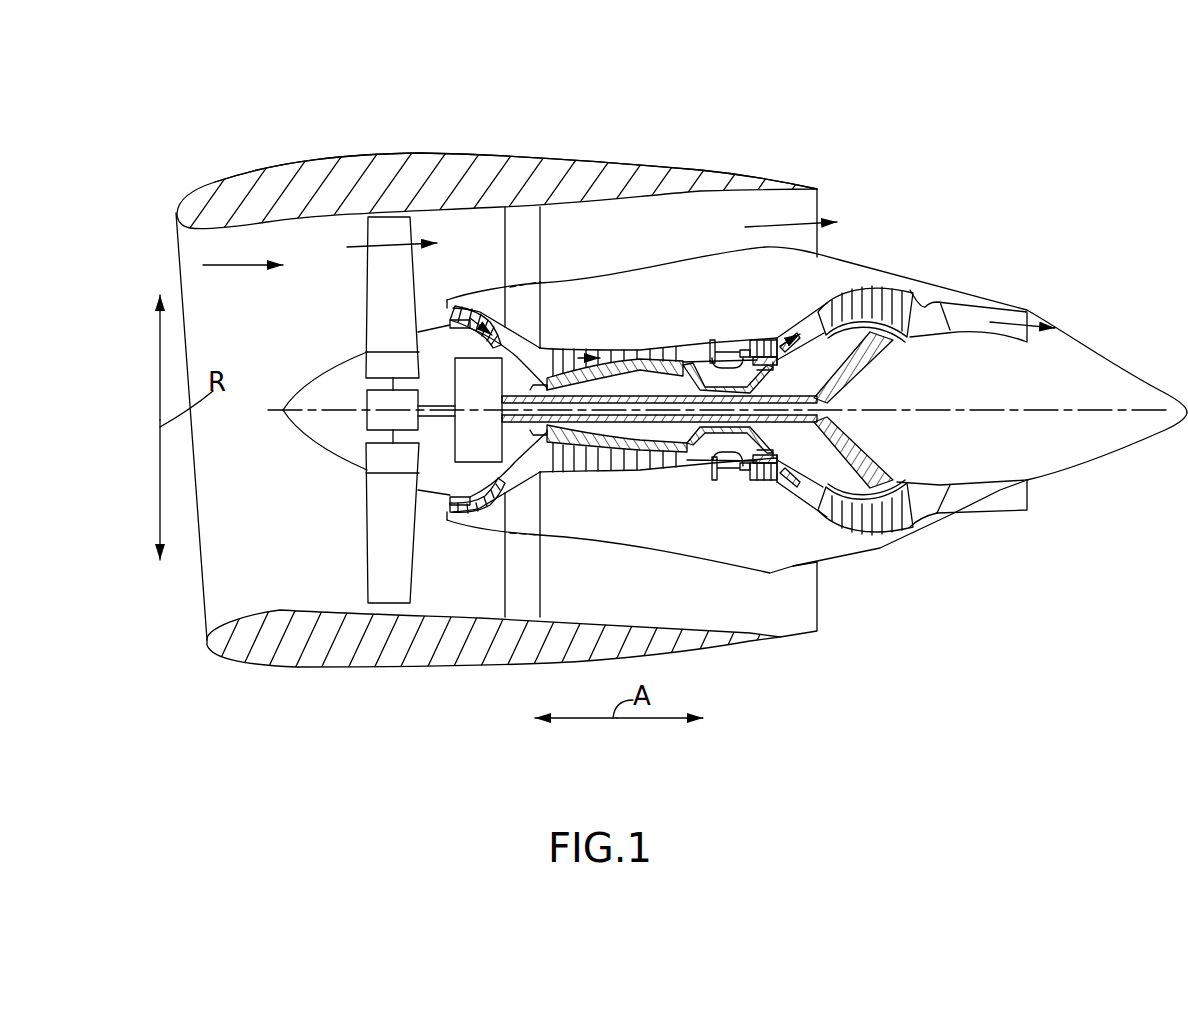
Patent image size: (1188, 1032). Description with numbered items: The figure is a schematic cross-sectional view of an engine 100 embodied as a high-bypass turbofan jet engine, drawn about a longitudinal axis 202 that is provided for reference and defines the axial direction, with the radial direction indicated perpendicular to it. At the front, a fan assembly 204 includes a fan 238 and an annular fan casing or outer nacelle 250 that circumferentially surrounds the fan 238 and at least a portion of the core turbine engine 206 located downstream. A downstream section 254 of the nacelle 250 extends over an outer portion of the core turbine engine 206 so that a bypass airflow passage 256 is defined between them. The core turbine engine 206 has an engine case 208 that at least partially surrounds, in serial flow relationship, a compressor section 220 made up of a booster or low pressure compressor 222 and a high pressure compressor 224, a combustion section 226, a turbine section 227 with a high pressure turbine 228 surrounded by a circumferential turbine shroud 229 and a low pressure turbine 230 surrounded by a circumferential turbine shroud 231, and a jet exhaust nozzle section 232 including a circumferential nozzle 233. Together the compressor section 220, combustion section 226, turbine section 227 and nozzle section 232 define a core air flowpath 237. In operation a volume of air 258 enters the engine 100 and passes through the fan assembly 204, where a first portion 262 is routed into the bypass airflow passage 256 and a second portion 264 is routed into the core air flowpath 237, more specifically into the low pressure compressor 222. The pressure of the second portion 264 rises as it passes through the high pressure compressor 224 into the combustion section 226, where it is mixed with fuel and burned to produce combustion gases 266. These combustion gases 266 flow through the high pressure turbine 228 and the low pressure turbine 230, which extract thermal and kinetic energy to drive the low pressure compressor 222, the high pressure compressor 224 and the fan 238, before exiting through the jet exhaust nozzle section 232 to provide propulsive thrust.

The engine 100 is at (1013, 192).
The longitudinal axis 202 is at (977, 410).
The fan assembly 204 is at (272, 238).
The core turbine engine 206 is at (632, 308).
The engine case 208 is at (727, 573).
The compressor section 220 is at (550, 325).
The low pressure (LP) compressor 222 is at (502, 483).
The high pressure (HP) compressor 224 is at (585, 475).
The combustion section 226 is at (729, 478).
The turbine section 227 is at (788, 567).
The high pressure (HP) turbine 228 is at (783, 472).
The circumferential turbine shroud 229 is at (777, 343).
The low pressure (LP) turbine 230 is at (908, 537).
The circumferential turbine shroud 231 is at (873, 533).
The jet exhaust nozzle section 232 is at (957, 511).
The circumferential nozzle 233 is at (1003, 513).
The core air flowpath 237 is at (527, 493).
The fan 238 is at (323, 465).
The outer nacelle 250 is at (443, 667).
The downstream section 254 is at (683, 168).
The bypass airflow passage 256 is at (684, 240).
The volume of air 258 is at (230, 263).
The first portion 262 is at (377, 243).
The second portion 264 is at (447, 308).
The combustion gases 266 is at (752, 356).